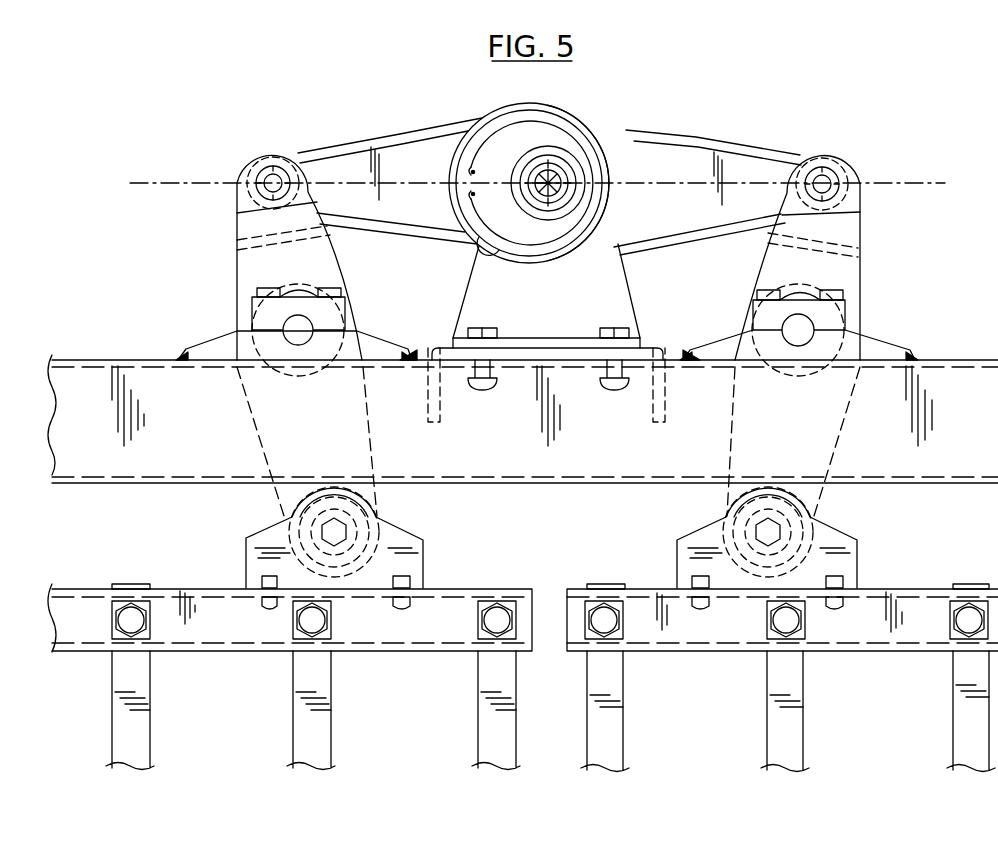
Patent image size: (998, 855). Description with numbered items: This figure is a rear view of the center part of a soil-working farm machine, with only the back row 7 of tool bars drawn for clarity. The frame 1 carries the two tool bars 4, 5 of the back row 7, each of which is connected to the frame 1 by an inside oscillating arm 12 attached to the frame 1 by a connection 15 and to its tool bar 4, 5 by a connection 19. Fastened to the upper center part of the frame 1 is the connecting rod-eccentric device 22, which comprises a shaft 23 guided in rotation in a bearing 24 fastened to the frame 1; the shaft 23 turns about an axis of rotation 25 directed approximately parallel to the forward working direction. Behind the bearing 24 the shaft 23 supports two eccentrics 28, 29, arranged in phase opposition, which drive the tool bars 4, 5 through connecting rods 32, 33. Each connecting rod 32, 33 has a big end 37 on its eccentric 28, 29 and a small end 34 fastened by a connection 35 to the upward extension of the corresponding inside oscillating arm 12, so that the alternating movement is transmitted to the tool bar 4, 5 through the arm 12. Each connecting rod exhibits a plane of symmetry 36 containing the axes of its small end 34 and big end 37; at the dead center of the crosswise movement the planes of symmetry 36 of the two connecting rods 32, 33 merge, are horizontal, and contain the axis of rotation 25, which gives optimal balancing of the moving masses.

The frame 1 is at (540, 496).
The tool bar 4 is at (696, 664).
The tool bar 5 is at (402, 667).
The back row 7 is at (74, 576).
The inside oscillating arm 12 is at (247, 263).
The connection 15 is at (281, 326).
The connection 19 is at (303, 514).
The connecting rod-eccentric device 22 is at (413, 105).
The shaft 23 is at (563, 190).
The bearing 24 is at (618, 312).
The axis of rotation 25 is at (560, 174).
The eccentric 28 is at (598, 238).
The eccentric 29 is at (498, 249).
The connecting rod 32 is at (712, 216).
The connecting rod 33 is at (406, 222).
The small end 34 is at (270, 150).
The connection 35 is at (259, 177).
The plane of symmetry 36 is at (148, 181).
The big end 37 is at (485, 120).